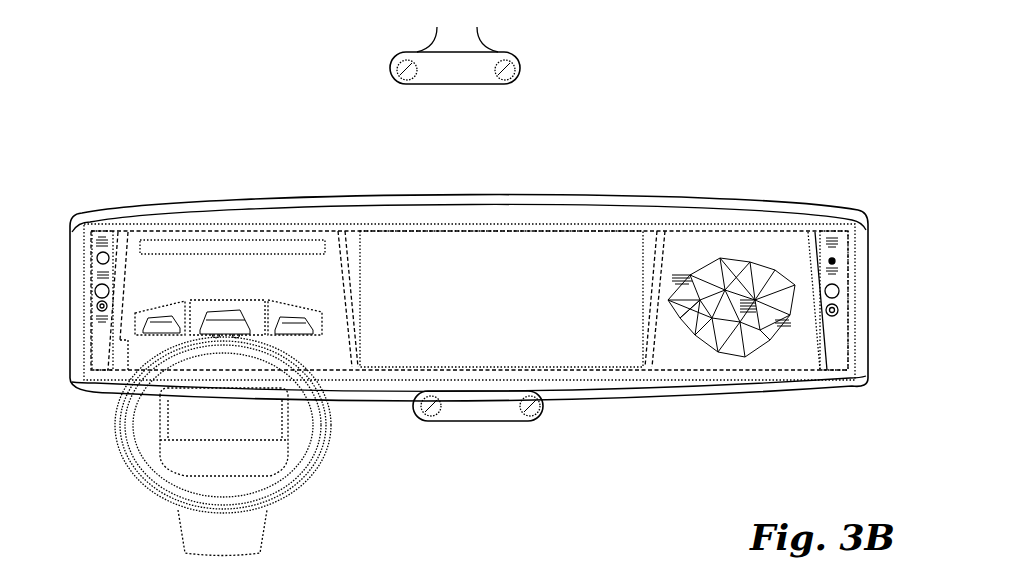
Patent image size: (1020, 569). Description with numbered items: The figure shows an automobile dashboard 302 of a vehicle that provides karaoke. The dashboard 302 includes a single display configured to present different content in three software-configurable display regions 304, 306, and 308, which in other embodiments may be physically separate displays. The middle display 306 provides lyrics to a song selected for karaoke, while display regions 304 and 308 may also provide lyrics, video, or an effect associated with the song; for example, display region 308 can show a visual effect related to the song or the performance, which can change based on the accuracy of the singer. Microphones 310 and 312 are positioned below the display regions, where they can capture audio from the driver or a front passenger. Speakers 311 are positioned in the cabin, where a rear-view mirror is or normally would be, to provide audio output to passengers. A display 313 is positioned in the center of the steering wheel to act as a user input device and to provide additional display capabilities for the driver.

The automobile dashboard 302 is at (118, 208).
The display region 304 is at (273, 243).
The middle display 306 is at (563, 232).
The display region 308 is at (740, 250).
The microphone 310 is at (427, 416).
The speakers 311 is at (398, 73).
The microphone 312 is at (527, 416).
The display 313 is at (200, 423).